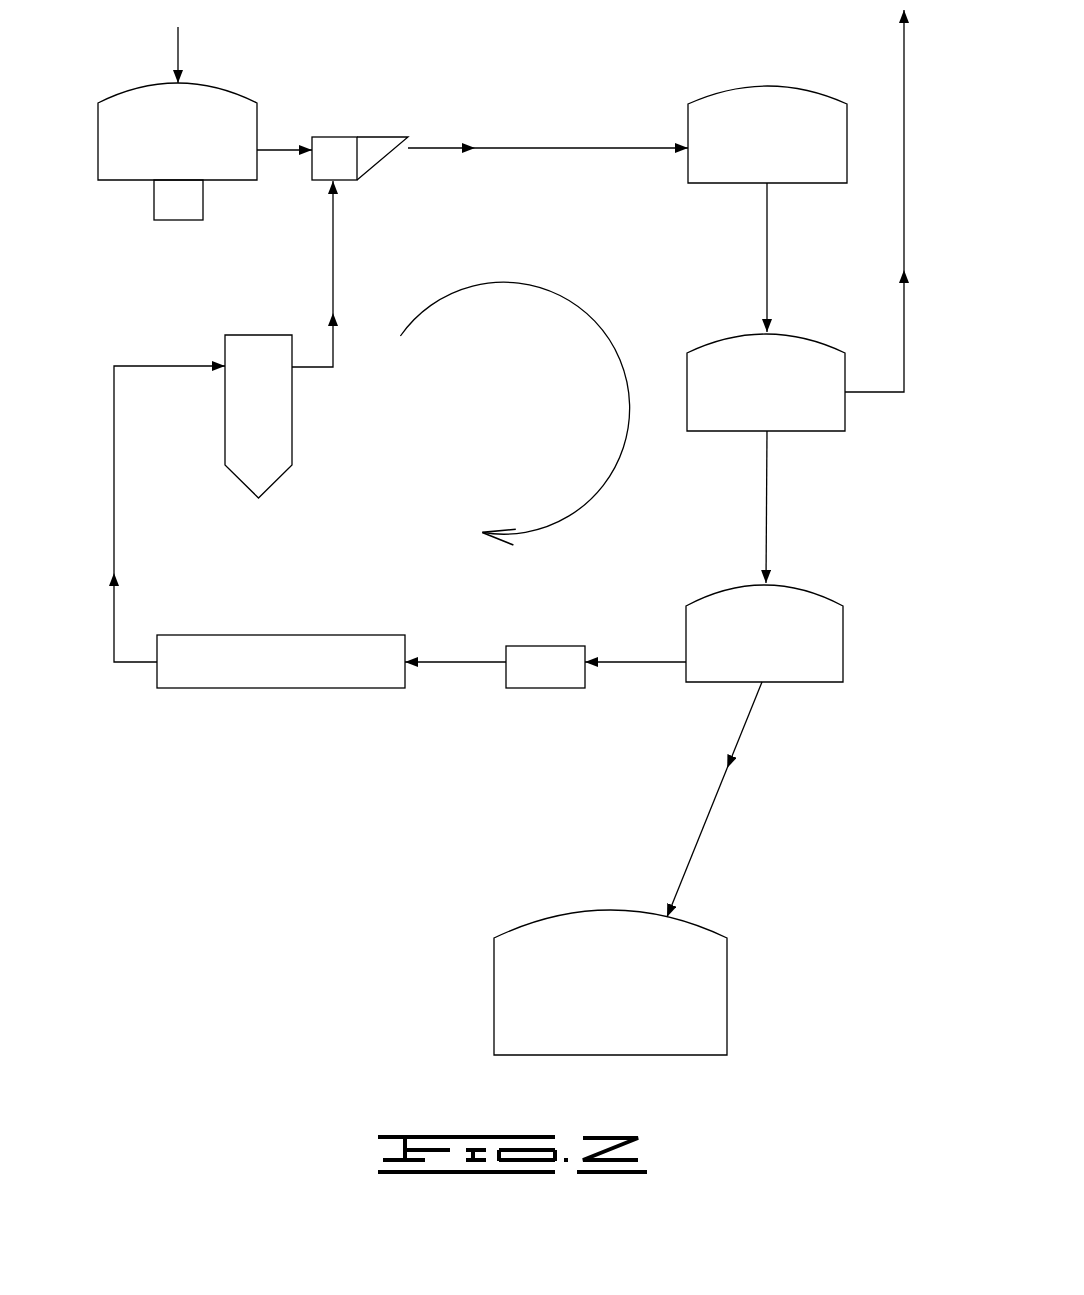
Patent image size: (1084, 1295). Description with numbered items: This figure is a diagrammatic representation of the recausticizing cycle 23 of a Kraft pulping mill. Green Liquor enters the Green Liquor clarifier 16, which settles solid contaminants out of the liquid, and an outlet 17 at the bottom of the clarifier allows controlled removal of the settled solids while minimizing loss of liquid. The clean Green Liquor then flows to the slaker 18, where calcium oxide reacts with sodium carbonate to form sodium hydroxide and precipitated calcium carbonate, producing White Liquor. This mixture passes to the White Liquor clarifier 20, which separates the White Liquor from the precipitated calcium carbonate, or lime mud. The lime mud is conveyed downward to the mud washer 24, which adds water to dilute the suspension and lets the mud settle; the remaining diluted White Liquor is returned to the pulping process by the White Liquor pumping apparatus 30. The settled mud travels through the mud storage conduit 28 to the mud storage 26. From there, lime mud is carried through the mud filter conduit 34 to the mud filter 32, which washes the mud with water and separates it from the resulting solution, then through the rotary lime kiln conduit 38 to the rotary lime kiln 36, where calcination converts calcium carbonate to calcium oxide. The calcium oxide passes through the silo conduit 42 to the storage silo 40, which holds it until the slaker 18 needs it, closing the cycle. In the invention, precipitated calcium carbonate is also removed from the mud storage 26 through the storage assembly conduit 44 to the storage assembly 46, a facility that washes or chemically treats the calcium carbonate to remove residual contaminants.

The Green Liquor clarifier 16 is at (143, 97).
The outlet 17 is at (175, 221).
The slaker 18 is at (332, 145).
The White Liquor clarifier 20 is at (757, 97).
The recausticizing cycle 23 is at (574, 305).
The mud washer 24 is at (800, 432).
The mud storage 26 is at (838, 647).
The mud storage conduit 28 is at (765, 513).
The White Liquor pumping apparatus 30 is at (903, 236).
The mud filter 32 is at (550, 688).
The mud filter conduit 34 is at (650, 660).
The rotary lime kiln 36 is at (293, 641).
The rotary lime kiln conduit 38 is at (462, 660).
The storage silo 40 is at (282, 420).
The silo conduit 42 is at (115, 535).
The storage assembly conduit 44 is at (710, 817).
The storage assembly 46 is at (713, 972).